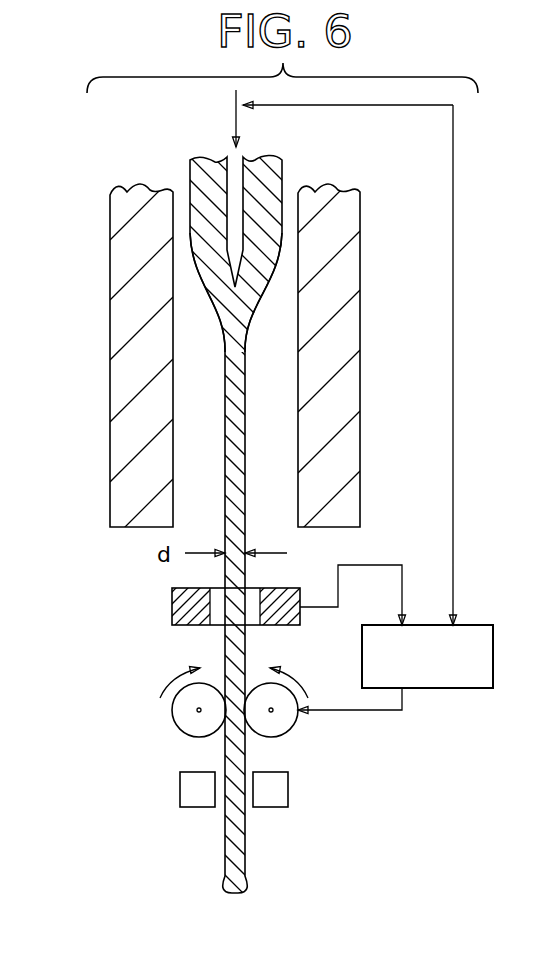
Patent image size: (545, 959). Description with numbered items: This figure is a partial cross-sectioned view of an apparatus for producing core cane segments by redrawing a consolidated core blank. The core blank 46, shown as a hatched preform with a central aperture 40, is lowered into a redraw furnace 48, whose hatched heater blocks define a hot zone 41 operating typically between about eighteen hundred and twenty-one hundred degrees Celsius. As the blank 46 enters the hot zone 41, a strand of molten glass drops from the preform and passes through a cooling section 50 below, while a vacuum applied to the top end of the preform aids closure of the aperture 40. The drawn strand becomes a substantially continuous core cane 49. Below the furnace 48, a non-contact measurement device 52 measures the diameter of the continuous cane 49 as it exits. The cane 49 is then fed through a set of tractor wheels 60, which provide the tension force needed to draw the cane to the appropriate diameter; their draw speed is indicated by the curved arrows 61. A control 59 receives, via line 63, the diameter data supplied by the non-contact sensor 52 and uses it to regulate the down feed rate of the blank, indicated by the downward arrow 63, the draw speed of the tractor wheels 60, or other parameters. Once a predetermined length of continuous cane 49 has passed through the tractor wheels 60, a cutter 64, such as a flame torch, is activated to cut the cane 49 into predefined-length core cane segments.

The aperture 40 is at (233, 178).
The hot zone 41 is at (284, 263).
The core blank 46 is at (288, 170).
The redraw furnace 48 is at (113, 190).
The continuous core cane 49 is at (245, 843).
The cooling section 50 is at (110, 506).
The non-contact measurement device 52 is at (172, 606).
The control 59 is at (493, 672).
The tractor wheels 60 is at (170, 722).
The draw speed arrows 61 is at (172, 679).
The down feed rate arrow / signal line 63 is at (236, 108).
The cutter 64 is at (180, 788).